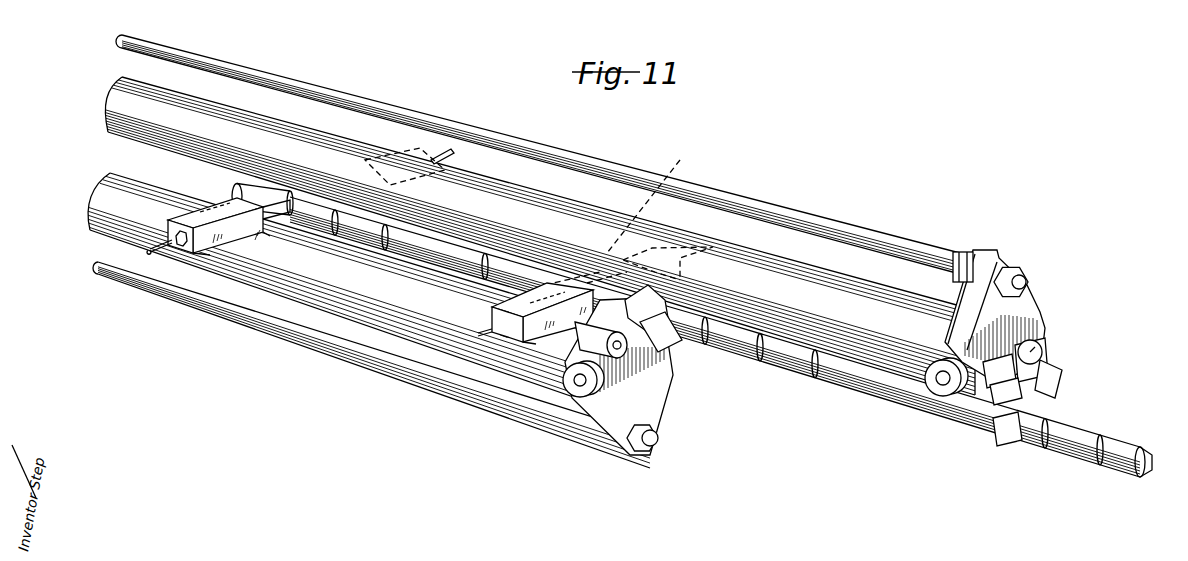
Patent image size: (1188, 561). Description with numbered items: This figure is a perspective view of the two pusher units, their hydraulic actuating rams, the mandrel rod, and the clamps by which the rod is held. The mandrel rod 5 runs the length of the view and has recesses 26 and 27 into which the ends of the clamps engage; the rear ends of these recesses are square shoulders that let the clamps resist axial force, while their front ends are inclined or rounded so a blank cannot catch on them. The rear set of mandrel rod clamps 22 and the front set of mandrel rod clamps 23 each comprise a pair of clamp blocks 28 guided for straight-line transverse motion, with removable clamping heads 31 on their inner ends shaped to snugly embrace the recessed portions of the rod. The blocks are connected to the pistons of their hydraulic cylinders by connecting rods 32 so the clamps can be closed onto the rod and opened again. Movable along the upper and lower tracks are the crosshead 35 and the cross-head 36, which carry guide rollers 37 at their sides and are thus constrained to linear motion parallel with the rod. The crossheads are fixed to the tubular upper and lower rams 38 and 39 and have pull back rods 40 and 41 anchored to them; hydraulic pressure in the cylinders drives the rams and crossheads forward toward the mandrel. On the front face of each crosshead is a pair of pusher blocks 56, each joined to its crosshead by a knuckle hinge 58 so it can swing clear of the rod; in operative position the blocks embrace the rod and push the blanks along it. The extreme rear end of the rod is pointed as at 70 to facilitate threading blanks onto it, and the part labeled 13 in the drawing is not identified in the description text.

The mandrel rod 5 is at (1152, 470).
The shaft 13 is at (1108, 432).
The rear set of mandrel rod clamps 22 is at (222, 210).
The front set of mandrel rod clamps 23 is at (520, 336).
The recess 26 is at (290, 230).
The recess 27 is at (539, 216).
The clamp block 28 is at (207, 262).
The clamping head 31 is at (263, 245).
The connecting rod 32 is at (150, 249).
The crosshead 35 is at (1037, 300).
The cross-head 36 is at (667, 395).
The guide roller 37 is at (600, 400).
The upper ram 38 is at (822, 262).
The lower ram 39 is at (125, 173).
The pull back rod 40 is at (850, 223).
The pull back rod 41 is at (333, 353).
The pusher block 56 is at (695, 345).
The knuckle hinge 58 is at (622, 384).
The pointed rear end 70 is at (246, 190).